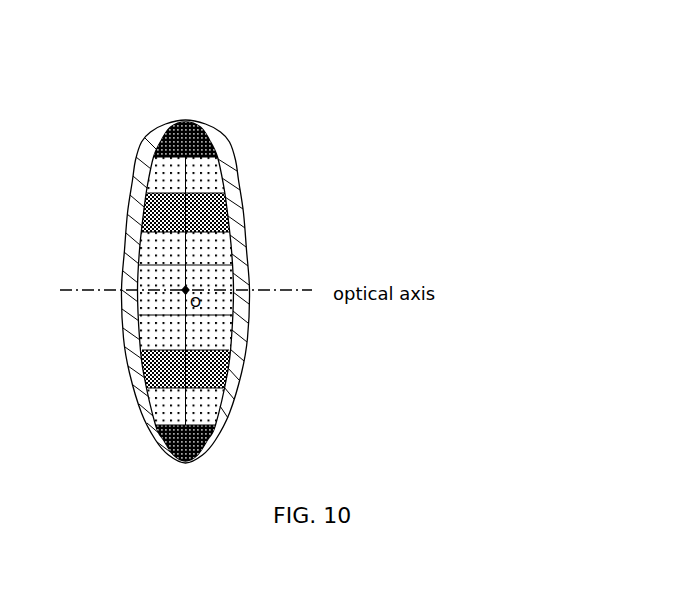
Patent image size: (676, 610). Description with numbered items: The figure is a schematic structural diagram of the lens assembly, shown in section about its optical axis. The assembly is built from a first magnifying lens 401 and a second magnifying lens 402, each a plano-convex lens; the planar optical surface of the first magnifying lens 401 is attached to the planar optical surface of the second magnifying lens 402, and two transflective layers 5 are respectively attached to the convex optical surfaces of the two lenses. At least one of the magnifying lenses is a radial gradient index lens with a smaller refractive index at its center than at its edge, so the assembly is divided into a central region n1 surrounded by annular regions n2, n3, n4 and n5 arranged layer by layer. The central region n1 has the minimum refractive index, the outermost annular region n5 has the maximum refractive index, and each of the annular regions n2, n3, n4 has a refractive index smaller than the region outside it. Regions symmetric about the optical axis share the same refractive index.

The transflective layer 5 is at (179, 256).
The first magnifying lens 401 is at (171, 124).
The second magnifying lens 402 is at (200, 124).
The central region n1 is at (264, 280).
The annular region n2 is at (264, 338).
The annular region n3 is at (264, 373).
The annular region n4 is at (264, 413).
The annular region n5 is at (271, 443).